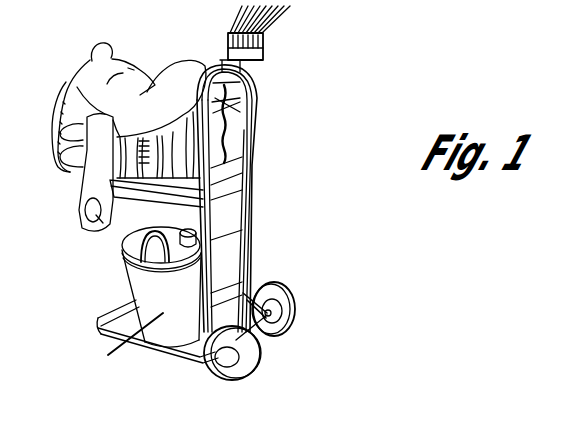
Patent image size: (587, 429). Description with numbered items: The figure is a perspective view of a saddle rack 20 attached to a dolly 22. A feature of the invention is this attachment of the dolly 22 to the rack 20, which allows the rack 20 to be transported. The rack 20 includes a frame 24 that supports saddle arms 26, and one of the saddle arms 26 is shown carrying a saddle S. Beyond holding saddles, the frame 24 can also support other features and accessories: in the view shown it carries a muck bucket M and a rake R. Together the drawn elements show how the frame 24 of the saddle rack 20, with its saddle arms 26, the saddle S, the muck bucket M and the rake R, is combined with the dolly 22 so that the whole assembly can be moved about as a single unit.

The saddle rack 20 is at (96, 325).
The dolly 22 is at (263, 107).
The frame 24 is at (172, 206).
The saddle arms 26 is at (78, 185).
The rake R is at (265, 44).
The saddle S is at (135, 57).
The muck bucket M is at (148, 303).